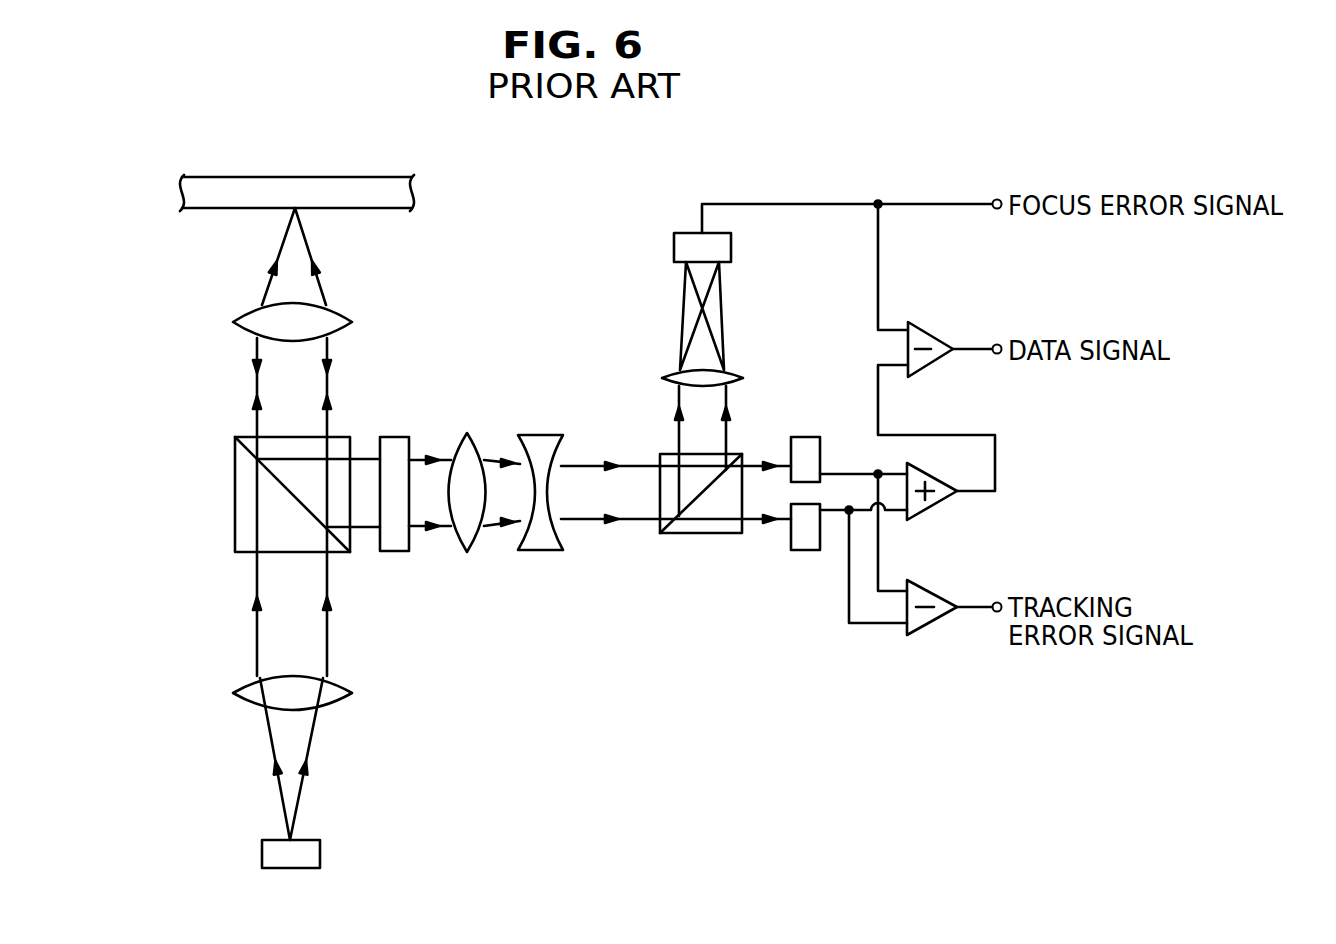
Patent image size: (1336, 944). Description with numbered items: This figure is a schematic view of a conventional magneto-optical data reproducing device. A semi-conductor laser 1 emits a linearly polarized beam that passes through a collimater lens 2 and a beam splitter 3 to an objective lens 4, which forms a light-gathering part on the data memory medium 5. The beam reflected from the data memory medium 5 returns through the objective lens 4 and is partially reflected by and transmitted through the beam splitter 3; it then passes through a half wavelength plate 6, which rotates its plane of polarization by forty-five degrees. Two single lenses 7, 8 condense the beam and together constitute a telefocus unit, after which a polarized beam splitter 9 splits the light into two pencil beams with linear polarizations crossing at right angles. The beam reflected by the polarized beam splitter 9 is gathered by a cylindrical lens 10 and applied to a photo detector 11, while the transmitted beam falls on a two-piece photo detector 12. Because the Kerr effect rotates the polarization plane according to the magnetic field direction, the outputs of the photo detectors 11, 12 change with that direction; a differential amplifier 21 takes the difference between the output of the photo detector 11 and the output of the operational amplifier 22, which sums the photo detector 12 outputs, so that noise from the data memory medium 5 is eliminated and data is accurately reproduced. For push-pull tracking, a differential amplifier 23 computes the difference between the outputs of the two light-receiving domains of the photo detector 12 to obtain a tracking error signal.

The semi-conductor laser 1 is at (268, 853).
The collimater lens 2 is at (255, 688).
The beam splitter 3 is at (245, 495).
The objective lens 4 is at (262, 321).
The data memory medium 5 is at (372, 190).
The half wavelength plate 6 is at (395, 537).
The single lens 7 is at (467, 530).
The single lens 8 is at (538, 543).
The polarized beam splitter 9 is at (714, 530).
The cylindrical lens 10 is at (670, 379).
The photo detector 11 is at (688, 247).
The photo detector 12 is at (808, 540).
The differential amplifier 21 is at (931, 336).
The operational amplifier 22 is at (933, 503).
The differential amplifier 23 is at (933, 623).